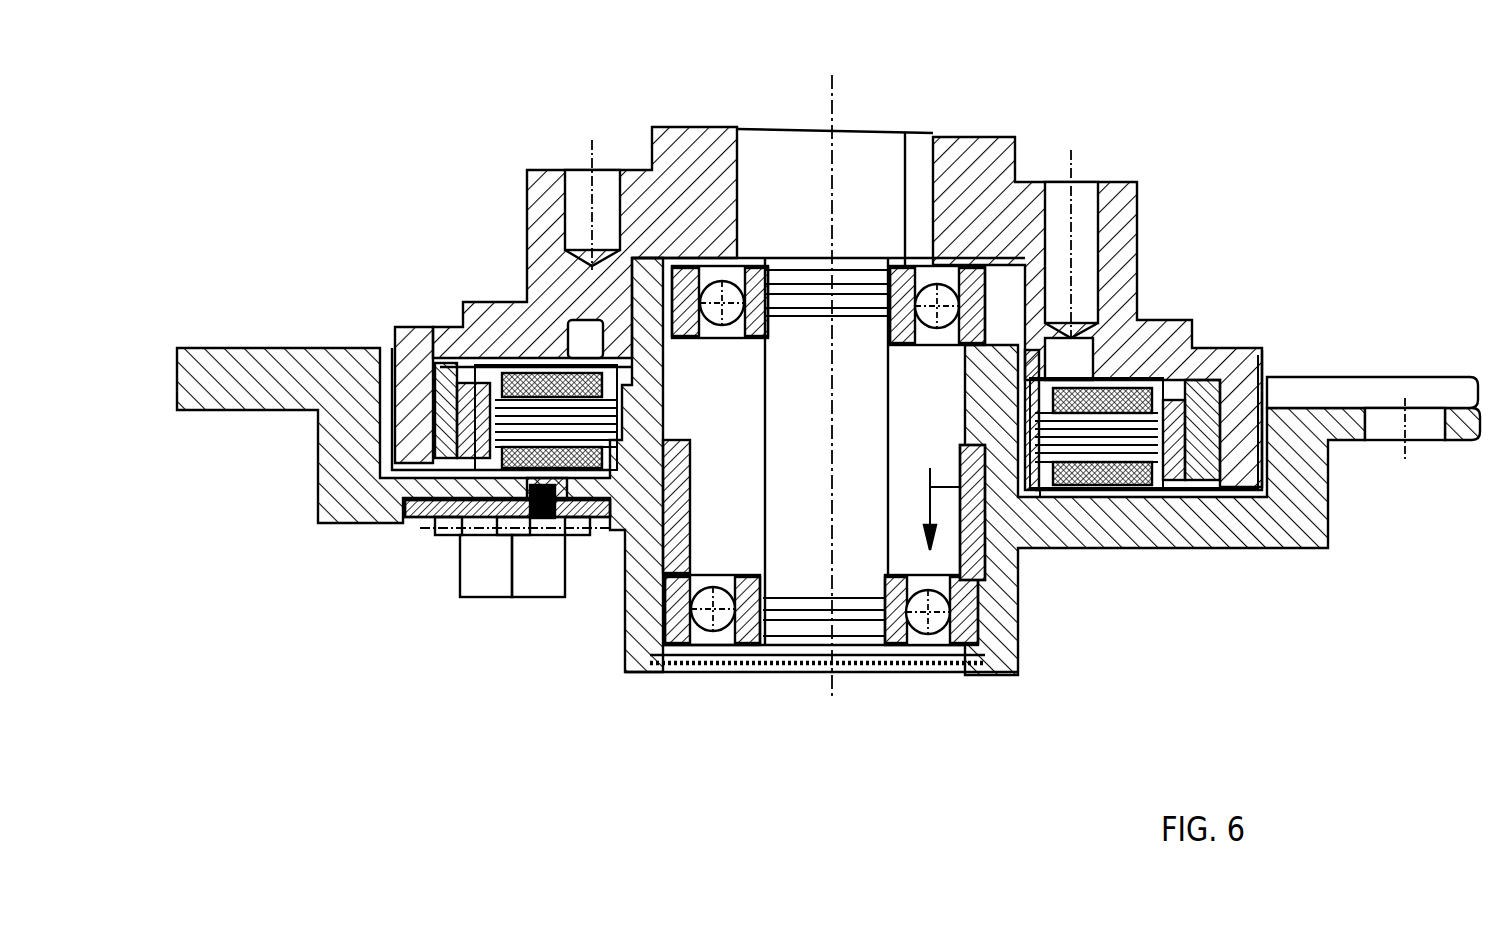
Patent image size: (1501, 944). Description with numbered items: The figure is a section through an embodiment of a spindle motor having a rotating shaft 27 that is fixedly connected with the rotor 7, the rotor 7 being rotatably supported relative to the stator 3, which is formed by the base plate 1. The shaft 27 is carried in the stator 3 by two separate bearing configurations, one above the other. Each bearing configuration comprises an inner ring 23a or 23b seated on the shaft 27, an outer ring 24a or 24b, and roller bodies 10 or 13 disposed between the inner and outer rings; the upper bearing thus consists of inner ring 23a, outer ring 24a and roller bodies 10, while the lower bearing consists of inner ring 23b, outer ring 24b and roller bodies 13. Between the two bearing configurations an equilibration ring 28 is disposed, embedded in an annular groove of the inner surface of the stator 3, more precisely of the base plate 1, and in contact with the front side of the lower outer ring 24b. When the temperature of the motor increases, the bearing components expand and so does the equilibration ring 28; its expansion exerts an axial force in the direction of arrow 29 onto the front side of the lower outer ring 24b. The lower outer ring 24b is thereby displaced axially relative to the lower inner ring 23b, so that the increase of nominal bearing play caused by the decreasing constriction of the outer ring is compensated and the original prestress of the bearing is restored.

The base plate 1 is at (1257, 548).
The stator 3 is at (1178, 562).
The rotor 7 is at (1155, 256).
The roller bodies 10 is at (977, 266).
The roller bodies 13 is at (928, 710).
The inner ring 23a is at (905, 265).
The inner ring 23b is at (913, 703).
The outer ring 24a is at (955, 288).
The outer ring 24b is at (988, 704).
The rotating shaft 27 is at (800, 185).
The equilibration ring 28 is at (1018, 585).
The arrow 29 is at (1058, 545).